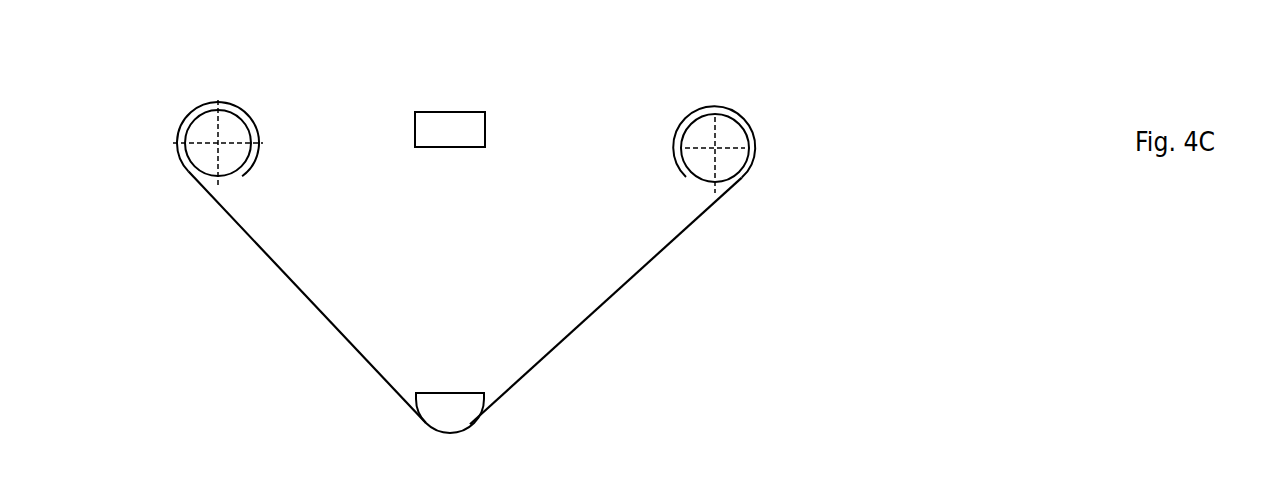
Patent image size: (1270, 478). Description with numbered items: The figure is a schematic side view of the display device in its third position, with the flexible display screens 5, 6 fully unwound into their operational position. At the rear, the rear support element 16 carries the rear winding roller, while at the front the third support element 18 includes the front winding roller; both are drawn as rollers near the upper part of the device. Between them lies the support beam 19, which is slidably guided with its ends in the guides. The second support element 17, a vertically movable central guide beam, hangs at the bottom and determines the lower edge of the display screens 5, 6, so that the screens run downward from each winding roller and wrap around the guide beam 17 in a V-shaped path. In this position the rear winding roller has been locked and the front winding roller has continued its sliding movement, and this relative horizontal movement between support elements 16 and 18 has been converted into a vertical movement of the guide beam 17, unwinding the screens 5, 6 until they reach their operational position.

The third support element 18 is at (216, 127).
The rear support element 16 is at (728, 138).
The support beam 19 is at (465, 127).
The display screen 6 is at (293, 292).
The display screen 5 is at (633, 278).
The second support element 17 is at (466, 401).